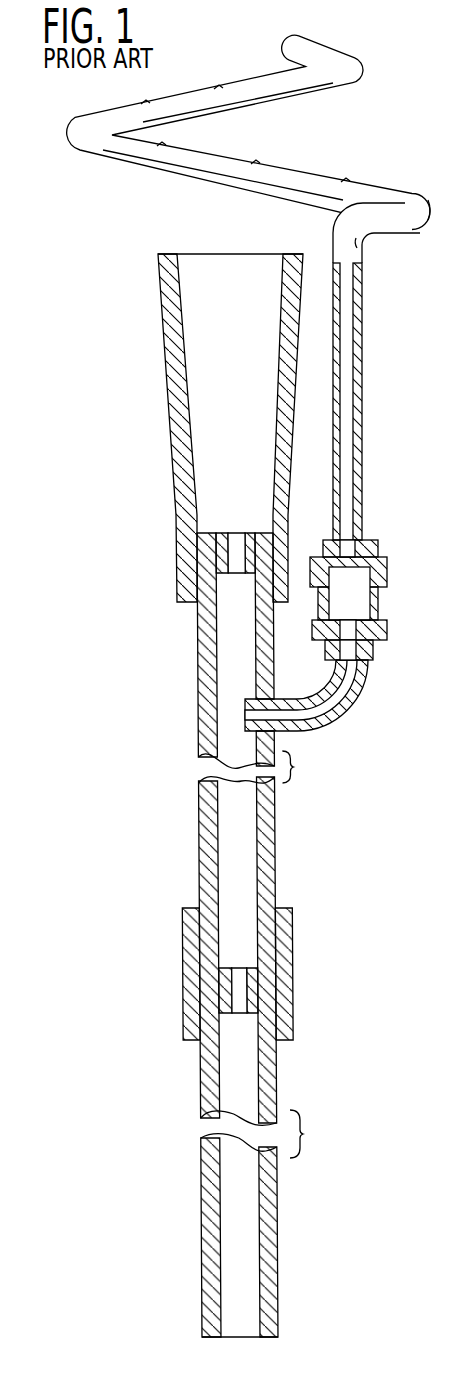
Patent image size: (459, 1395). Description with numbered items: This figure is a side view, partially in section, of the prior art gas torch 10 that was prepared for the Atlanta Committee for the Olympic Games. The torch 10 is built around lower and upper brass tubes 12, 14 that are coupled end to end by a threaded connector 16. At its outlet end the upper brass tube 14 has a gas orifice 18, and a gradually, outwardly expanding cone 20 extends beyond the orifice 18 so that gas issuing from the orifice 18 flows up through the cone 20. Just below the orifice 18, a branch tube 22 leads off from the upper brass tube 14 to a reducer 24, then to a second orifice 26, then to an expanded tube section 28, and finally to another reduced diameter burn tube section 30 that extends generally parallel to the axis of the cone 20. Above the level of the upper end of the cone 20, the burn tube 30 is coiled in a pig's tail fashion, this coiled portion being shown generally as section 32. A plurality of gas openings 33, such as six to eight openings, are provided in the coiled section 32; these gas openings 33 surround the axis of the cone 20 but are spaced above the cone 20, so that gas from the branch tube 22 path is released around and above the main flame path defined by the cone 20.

The torch 10 is at (108, 602).
The lower brass tube 12 is at (200, 1077).
The upper brass tube 14 is at (198, 833).
The threaded connector 16 is at (182, 978).
The gas orifice 18 is at (237, 568).
The cone 20 is at (165, 356).
The branch tube 22 is at (340, 722).
The reducer 24 is at (375, 653).
The second orifice 26 is at (353, 628).
The expanded tube section 28 is at (380, 602).
The burn tube section 30 is at (360, 423).
The pig's tail coiled section 32 is at (113, 160).
The gas openings 33 is at (147, 104).